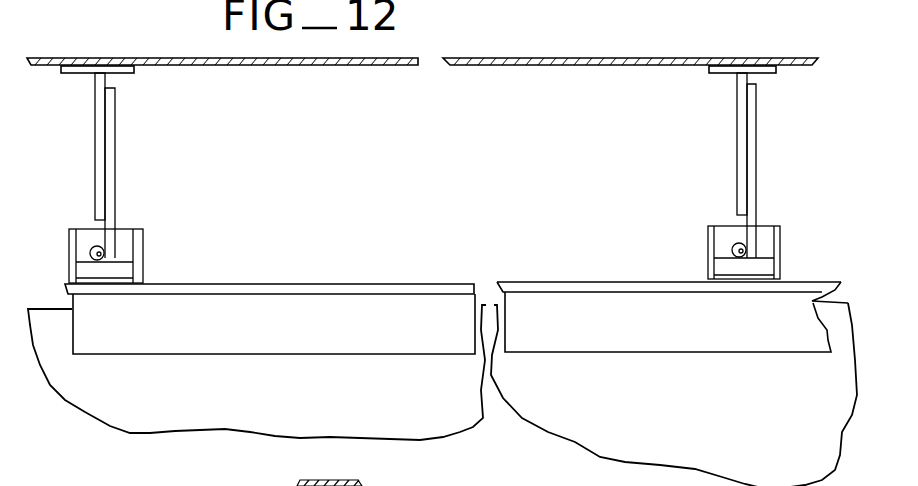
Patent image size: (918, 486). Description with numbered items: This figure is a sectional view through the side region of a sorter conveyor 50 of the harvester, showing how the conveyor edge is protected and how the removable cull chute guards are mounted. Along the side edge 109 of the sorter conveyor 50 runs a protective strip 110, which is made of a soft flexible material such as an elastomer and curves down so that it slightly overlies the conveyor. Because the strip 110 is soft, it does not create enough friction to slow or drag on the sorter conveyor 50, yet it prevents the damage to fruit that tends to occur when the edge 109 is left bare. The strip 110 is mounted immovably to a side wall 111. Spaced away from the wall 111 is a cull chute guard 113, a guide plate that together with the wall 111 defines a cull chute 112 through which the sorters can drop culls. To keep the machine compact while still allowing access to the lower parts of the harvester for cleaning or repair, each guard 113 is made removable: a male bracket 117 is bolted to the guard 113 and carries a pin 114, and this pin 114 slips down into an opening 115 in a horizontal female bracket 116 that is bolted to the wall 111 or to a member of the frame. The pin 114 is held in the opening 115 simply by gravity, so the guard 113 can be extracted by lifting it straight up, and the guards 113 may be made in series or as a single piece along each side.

The sorter conveyor 50 is at (442, 412).
The side edge 109 is at (53, 320).
The protective strip 110 is at (256, 338).
The side wall 111 is at (388, 284).
The cull chute 112 is at (610, 203).
The cull chute guard 113 is at (490, 66).
The pin 114 is at (90, 250).
The opening 115 is at (101, 257).
The female bracket 116 is at (125, 238).
The male bracket 117 is at (115, 178).